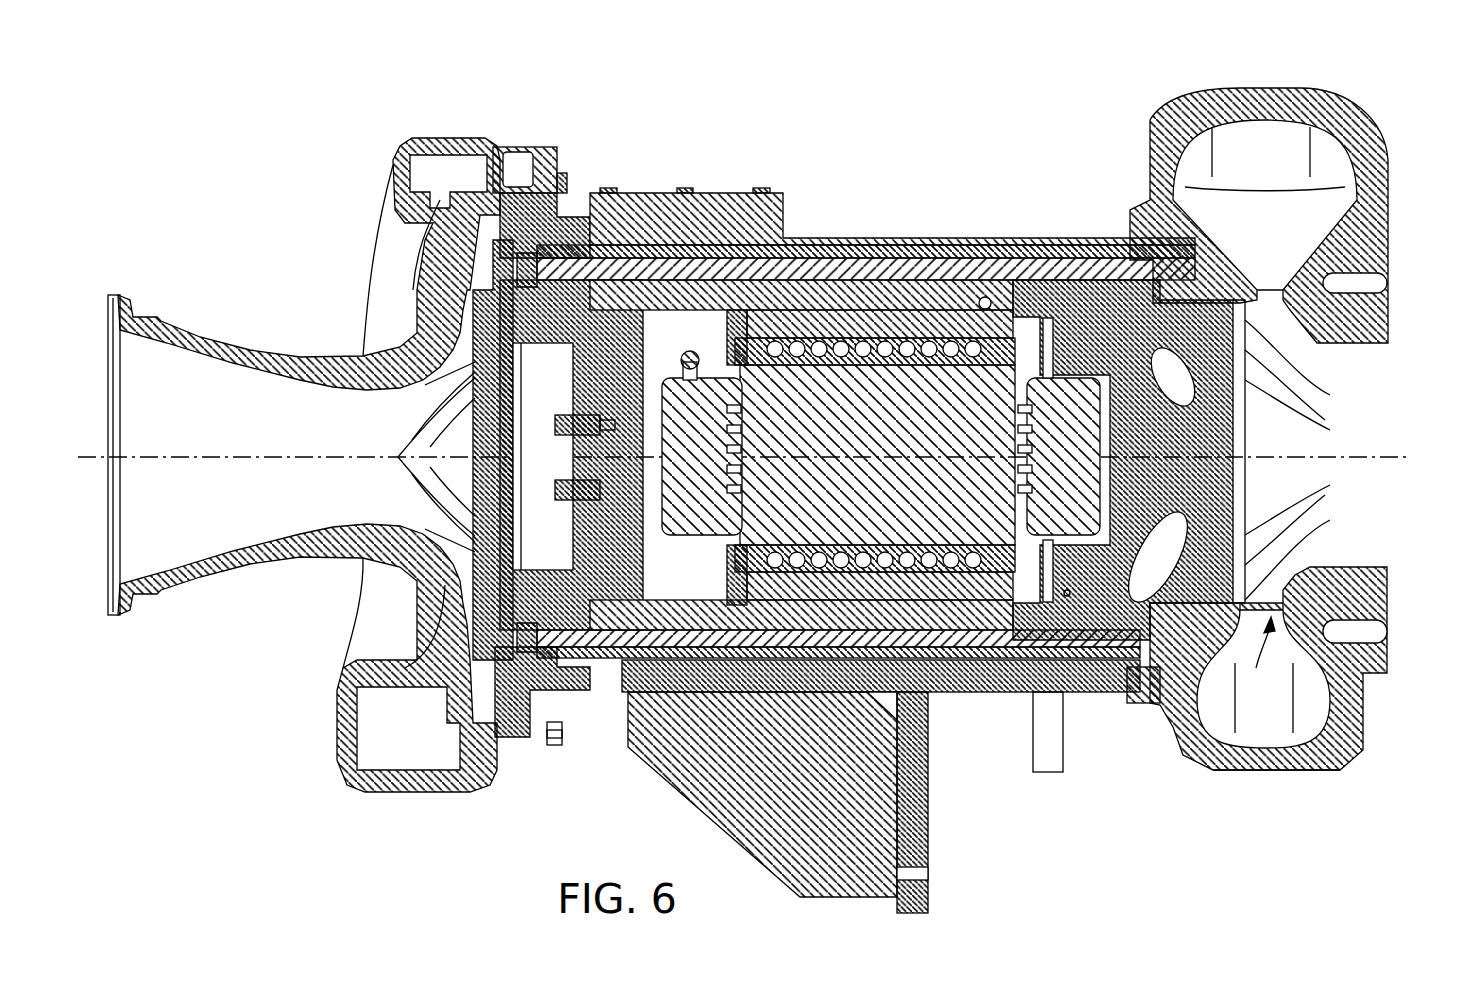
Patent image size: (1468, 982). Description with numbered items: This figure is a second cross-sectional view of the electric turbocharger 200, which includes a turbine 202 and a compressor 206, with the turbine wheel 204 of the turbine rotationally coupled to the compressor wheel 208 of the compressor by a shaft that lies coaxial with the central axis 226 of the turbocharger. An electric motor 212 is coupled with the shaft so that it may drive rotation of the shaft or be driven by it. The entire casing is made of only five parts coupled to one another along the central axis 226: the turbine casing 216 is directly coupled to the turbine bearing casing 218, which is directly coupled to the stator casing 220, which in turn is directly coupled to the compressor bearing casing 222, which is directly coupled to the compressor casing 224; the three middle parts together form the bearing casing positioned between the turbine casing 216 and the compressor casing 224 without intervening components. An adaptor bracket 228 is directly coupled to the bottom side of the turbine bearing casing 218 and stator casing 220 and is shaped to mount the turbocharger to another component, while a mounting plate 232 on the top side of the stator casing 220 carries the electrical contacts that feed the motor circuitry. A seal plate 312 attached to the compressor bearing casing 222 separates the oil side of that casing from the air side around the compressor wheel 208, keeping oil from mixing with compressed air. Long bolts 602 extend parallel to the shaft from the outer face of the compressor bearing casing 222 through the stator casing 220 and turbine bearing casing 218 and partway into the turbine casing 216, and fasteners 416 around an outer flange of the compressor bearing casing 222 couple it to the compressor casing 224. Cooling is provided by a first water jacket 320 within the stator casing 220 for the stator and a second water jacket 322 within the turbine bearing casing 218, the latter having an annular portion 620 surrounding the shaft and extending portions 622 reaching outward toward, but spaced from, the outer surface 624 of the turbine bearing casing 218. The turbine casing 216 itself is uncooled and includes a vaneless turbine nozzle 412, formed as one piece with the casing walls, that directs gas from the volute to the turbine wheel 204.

The turbocharger 200 is at (1275, 66).
The turbine 202 is at (1405, 210).
The turbine wheel 204 is at (1262, 450).
The compressor 206 is at (320, 243).
The compressor wheel 208 is at (468, 456).
The electric motor 212 is at (923, 352).
The turbine casing 216 is at (1282, 752).
The turbine bearing casing 218 is at (1066, 262).
The stator casing 220 is at (745, 227).
The compressor bearing casing 222 is at (548, 760).
The compressor casing 224 is at (358, 770).
The central axis 226 is at (1412, 452).
The adaptor bracket 228 is at (720, 803).
The mounting plate 232 is at (657, 193).
The seal plate 312 is at (505, 245).
The first water jacket 320 is at (937, 378).
The second water jacket 322 is at (1123, 325).
The vaneless turbine nozzle 412 is at (1255, 660).
The fasteners 416 is at (560, 186).
The bolts 602 is at (573, 265).
The annular portion 620 is at (1143, 580).
The extending portions 622 is at (1105, 575).
The outer surface 624 is at (1035, 662).